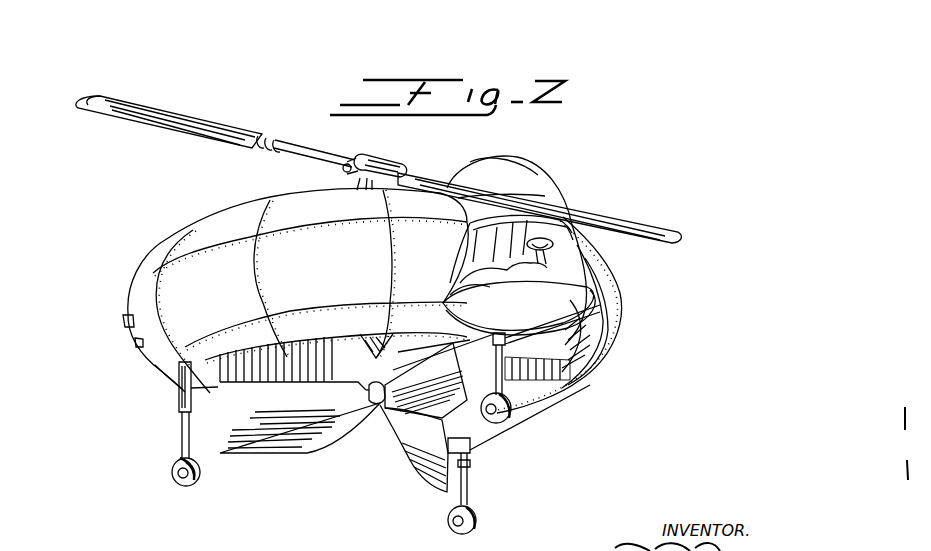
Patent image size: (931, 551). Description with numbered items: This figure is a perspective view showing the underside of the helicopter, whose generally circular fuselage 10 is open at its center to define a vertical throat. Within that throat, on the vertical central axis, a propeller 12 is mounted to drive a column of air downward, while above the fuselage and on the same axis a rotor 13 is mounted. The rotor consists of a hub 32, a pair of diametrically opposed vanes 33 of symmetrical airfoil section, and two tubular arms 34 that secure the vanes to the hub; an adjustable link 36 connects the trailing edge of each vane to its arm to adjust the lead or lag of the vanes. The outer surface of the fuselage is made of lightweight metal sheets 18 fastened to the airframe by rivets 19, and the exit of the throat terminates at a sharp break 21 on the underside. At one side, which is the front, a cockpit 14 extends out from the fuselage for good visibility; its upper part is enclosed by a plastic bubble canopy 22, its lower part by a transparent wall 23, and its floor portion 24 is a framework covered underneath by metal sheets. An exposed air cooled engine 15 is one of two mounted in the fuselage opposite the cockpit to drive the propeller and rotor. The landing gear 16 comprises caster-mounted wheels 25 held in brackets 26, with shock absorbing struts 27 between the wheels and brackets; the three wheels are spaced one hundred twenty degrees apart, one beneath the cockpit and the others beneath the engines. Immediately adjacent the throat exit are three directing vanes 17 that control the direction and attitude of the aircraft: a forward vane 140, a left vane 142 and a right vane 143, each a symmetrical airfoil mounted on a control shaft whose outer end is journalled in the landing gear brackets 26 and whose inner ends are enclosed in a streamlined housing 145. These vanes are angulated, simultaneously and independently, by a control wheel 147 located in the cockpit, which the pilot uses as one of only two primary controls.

The fuselage 10 is at (298, 290).
The propeller 12 is at (415, 352).
The rotor 13 is at (379, 169).
The cockpit 14 is at (540, 189).
The air cooled aircraft engine 15 is at (127, 330).
The landing gear 16 is at (472, 478).
The directing vanes 17 is at (300, 437).
The lightweight metal sheets 18 is at (147, 268).
The rivets 19 is at (600, 360).
The sharp break 21 is at (320, 341).
The canopy 22 is at (505, 172).
The transparent wall 23 is at (563, 250).
The floor portion 24 is at (553, 307).
The caster-mounted wheels 25 is at (200, 480).
The brackets 26 is at (179, 397).
The shock absorbing struts 27 is at (182, 432).
The hub 32 is at (380, 157).
The vanes 33 is at (150, 118).
The tubular arms 34 is at (294, 145).
The adjustable link 36 is at (267, 149).
The control vane 140 is at (458, 402).
The left control vane 142 is at (424, 470).
The right control vane 143 is at (294, 431).
The streamlined housing 145 is at (374, 406).
The control wheel 147 is at (549, 234).